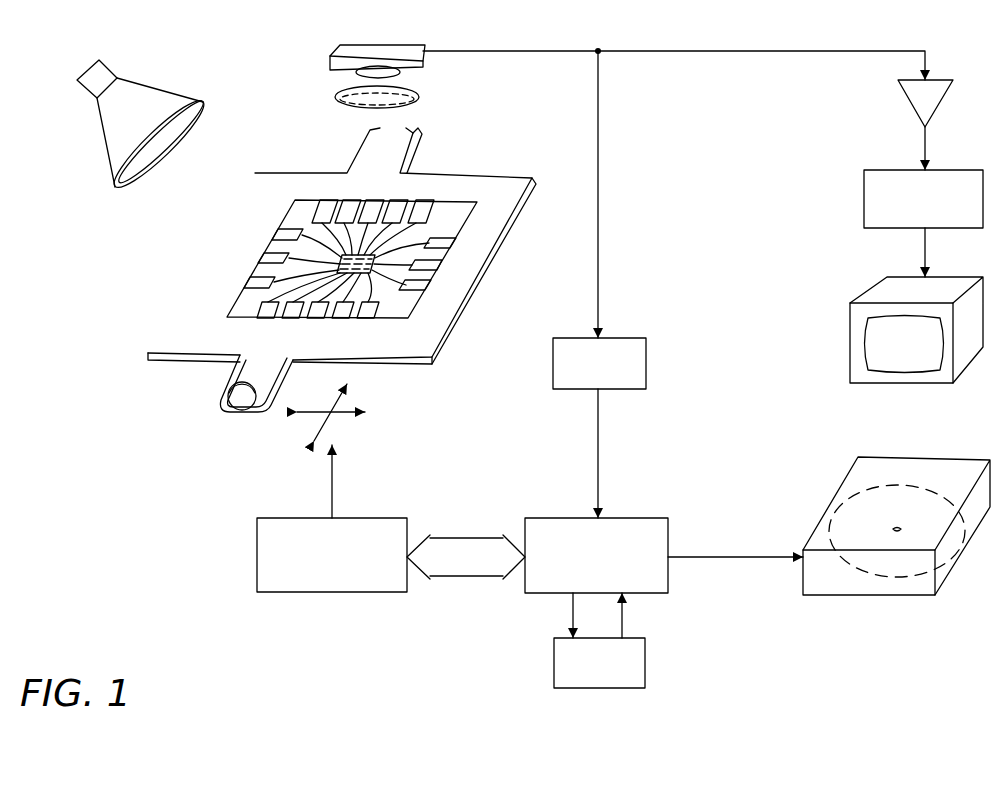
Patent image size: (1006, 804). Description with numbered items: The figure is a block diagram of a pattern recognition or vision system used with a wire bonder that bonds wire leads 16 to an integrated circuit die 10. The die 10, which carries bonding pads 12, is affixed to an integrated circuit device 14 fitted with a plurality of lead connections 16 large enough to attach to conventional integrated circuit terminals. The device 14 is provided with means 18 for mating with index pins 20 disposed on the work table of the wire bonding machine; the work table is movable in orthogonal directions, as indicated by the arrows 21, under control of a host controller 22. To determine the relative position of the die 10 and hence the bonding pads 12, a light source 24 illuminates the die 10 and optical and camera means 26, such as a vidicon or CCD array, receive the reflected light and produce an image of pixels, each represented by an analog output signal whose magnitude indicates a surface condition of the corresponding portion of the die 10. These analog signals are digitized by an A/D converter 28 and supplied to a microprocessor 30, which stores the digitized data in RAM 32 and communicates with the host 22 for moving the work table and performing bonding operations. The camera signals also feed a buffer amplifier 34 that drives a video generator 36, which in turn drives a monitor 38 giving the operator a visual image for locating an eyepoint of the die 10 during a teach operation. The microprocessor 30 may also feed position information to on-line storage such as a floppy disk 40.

The integrated circuit die 10 is at (400, 302).
The bonding pads 12 is at (268, 255).
The integrated circuit device 14 is at (182, 321).
The wire leads 16 is at (370, 290).
The means for mating with index pins 18 is at (232, 374).
The index pins 20 is at (243, 408).
The arrows 21 is at (340, 421).
The host controller 22 is at (362, 517).
The light source 24 is at (117, 138).
The optical and camera means 26 is at (337, 92).
The A/D converter 28 is at (652, 312).
The microprocessor 30 is at (627, 518).
The RAM 32 is at (647, 650).
The buffer amplifier 34 is at (908, 105).
The video generator 36 is at (864, 195).
The video monitor 38 is at (850, 337).
The floppy disk 40 is at (852, 468).